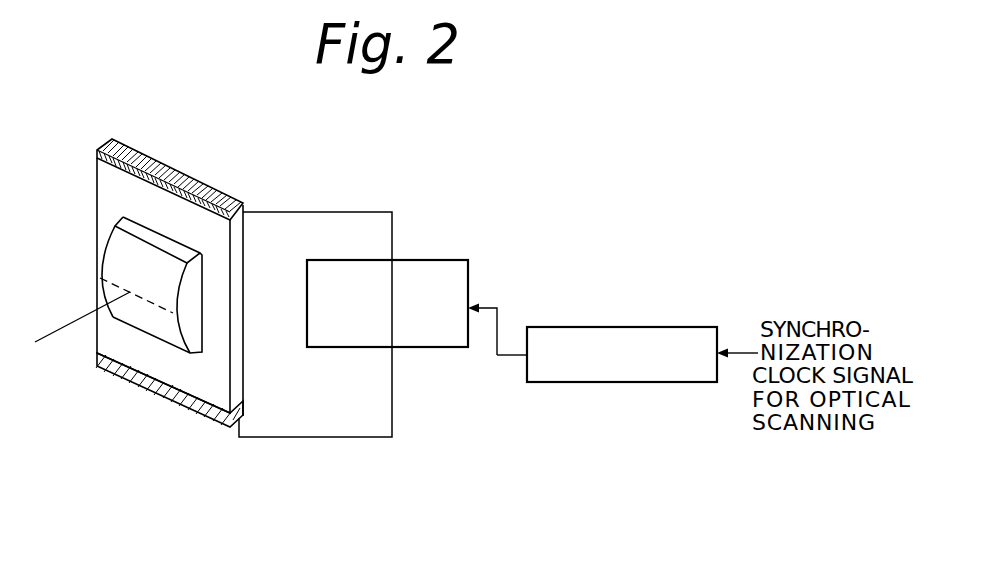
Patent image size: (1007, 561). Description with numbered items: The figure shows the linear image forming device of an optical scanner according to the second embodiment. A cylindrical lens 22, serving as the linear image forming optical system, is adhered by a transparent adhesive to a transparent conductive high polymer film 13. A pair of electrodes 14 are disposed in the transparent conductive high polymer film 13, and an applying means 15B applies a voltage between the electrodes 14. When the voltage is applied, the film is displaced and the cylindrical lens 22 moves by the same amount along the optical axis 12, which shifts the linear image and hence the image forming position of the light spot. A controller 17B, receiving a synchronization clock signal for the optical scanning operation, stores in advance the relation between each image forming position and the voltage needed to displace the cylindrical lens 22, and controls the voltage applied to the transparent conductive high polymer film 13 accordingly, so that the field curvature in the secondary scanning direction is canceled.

The optical axis 12 is at (52, 335).
The transparent conductive high polymer film 13 is at (237, 270).
The electrodes 14 is at (217, 190).
The applying means 15B is at (437, 260).
The controller 17B is at (625, 327).
The cylindrical lens 22 is at (115, 246).